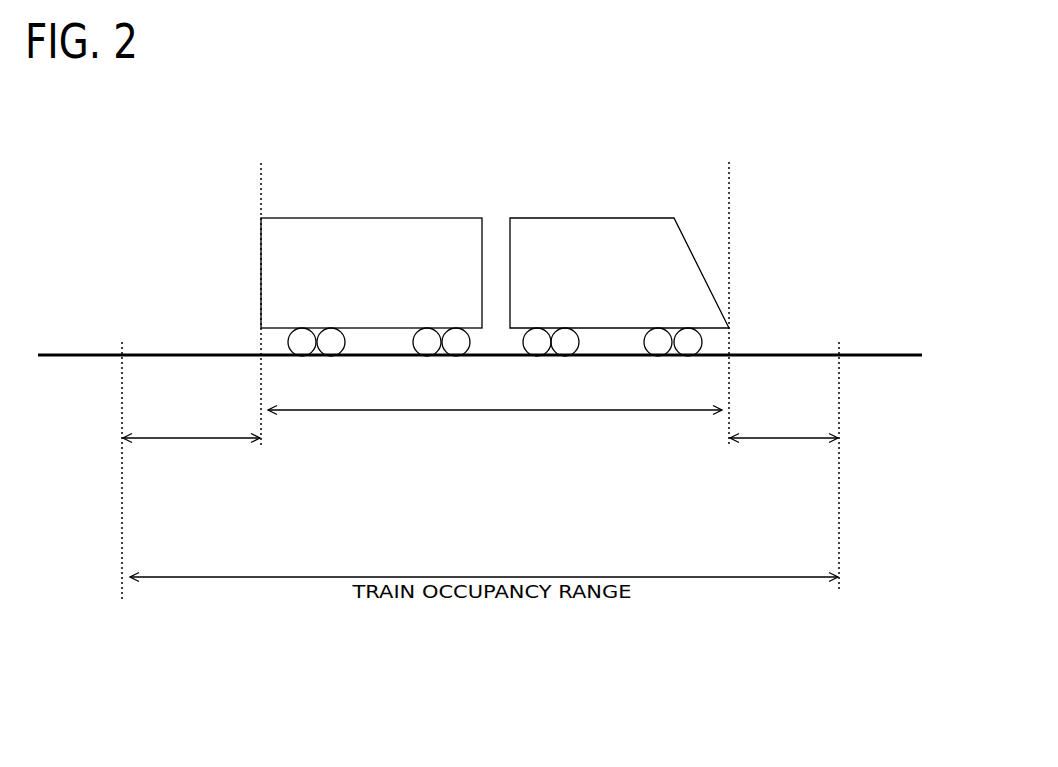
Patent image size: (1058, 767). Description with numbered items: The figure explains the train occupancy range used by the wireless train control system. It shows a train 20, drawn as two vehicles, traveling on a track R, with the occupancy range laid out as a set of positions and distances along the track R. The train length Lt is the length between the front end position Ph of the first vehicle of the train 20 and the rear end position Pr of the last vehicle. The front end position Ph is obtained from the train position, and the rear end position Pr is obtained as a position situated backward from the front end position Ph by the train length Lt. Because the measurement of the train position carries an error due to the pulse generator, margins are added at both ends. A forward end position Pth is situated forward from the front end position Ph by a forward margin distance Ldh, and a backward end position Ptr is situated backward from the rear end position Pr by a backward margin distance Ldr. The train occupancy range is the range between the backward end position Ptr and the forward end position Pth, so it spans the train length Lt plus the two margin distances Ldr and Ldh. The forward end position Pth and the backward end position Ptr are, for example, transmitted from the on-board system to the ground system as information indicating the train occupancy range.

The train 20 is at (590, 217).
The track R is at (163, 352).
The rear end position Pr is at (260, 281).
The front end position Ph is at (729, 281).
The backward end position Ptr is at (120, 497).
The forward end position Pth is at (840, 497).
The backward margin distance Ldr is at (138, 464).
The forward margin distance Ldh is at (832, 463).
The train length Lt is at (495, 421).